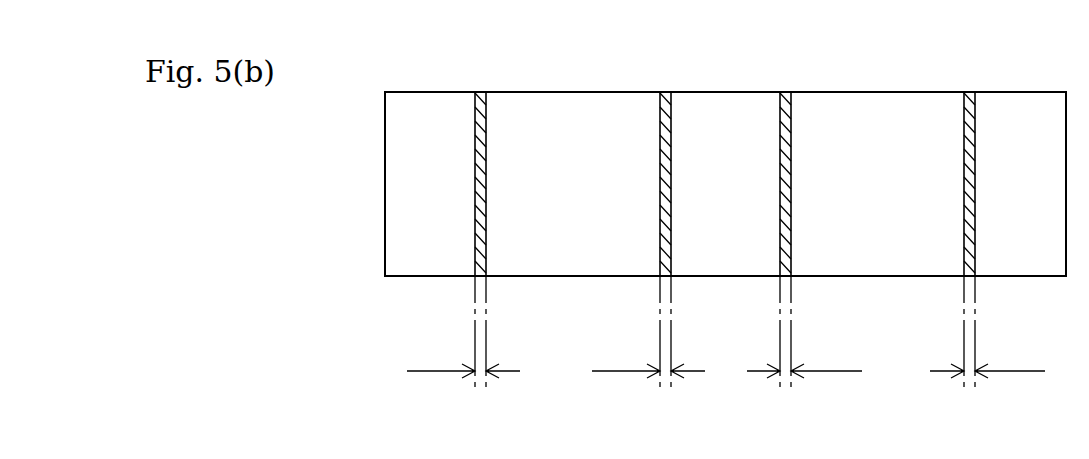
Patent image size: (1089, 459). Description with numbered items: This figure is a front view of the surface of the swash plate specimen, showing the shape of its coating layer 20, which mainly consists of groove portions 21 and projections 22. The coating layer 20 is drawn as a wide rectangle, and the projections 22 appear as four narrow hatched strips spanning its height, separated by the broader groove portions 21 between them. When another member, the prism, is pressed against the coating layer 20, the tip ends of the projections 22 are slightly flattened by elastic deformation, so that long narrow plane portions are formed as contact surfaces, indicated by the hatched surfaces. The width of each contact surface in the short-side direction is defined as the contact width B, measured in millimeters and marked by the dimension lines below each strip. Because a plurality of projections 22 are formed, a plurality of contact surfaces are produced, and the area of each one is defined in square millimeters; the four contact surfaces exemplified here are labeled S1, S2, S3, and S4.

The coating layer 20 is at (352, 176).
The groove portions 21 is at (427, 105).
The projections 22 is at (480, 117).
The contact surface area (first contact surface) S1 is at (470, 248).
The contact surface area (second contact surface) S2 is at (655, 248).
The contact surface area (third contact surface) S3 is at (797, 248).
The contact surface area (fourth contact surface) S4 is at (981, 248).
The contact width B is at (726, 331).